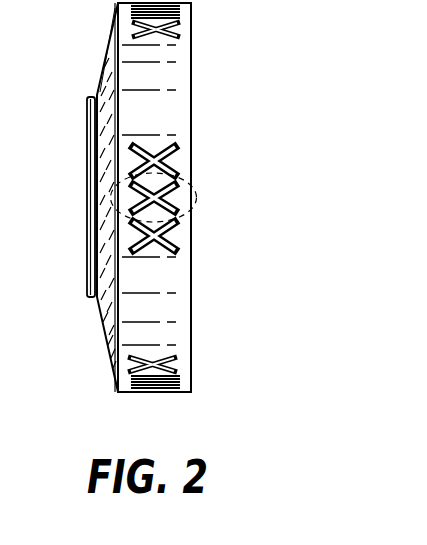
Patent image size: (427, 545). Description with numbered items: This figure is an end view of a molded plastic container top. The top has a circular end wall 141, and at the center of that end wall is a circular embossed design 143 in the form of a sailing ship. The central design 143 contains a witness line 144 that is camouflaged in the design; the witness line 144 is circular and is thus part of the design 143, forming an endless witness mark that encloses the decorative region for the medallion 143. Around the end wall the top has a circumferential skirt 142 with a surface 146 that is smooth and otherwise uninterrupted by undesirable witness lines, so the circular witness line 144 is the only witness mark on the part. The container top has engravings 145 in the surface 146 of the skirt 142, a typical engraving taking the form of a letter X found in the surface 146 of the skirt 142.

The circular end wall 141 is at (102, 333).
The circumferential skirt 142 is at (185, 313).
The circular embossed design 143 is at (86, 268).
The witness line 144 is at (88, 122).
The engravings 145 is at (198, 194).
The surface 146 is at (180, 78).